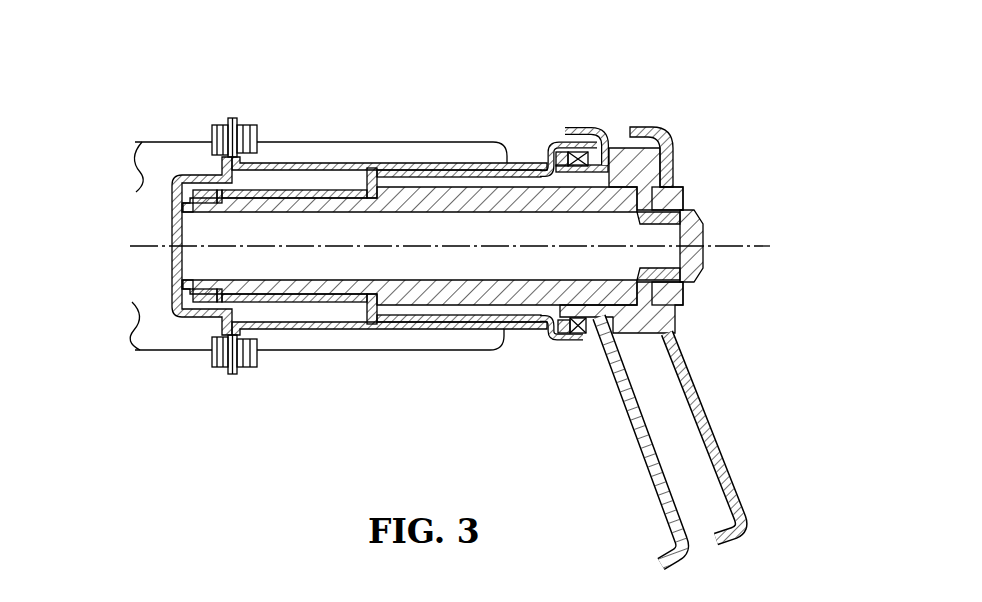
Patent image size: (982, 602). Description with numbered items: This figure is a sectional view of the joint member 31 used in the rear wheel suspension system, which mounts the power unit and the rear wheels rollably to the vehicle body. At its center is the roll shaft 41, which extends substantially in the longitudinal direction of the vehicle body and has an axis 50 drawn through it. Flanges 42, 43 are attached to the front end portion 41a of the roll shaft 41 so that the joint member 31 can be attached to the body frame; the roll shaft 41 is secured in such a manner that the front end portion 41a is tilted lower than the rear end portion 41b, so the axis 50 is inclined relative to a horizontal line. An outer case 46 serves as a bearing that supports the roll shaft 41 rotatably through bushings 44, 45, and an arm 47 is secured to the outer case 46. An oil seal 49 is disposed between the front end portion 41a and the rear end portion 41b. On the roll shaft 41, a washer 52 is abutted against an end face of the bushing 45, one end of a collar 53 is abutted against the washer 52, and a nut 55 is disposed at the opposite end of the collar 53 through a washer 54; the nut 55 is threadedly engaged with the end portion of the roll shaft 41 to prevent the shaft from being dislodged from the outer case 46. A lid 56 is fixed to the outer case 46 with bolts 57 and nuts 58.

The joint member 31 is at (397, 86).
The roll shaft 41 is at (620, 140).
The front end portion 41a is at (685, 194).
The rear end portion 41b is at (170, 212).
The flange 42 is at (703, 388).
The flange 43 is at (633, 440).
The bushing 44 is at (526, 169).
The bushing 45 is at (441, 141).
The outer case 46 is at (323, 162).
The arm 47 is at (178, 141).
The oil seal 49 is at (575, 343).
The axis 50 is at (748, 244).
The washer 52 is at (351, 307).
The collar 53 is at (294, 305).
The washer 54 is at (219, 304).
The nut 55 is at (172, 307).
The lid 56 is at (172, 270).
The bolt 57 is at (217, 124).
The nut 58 is at (248, 124).